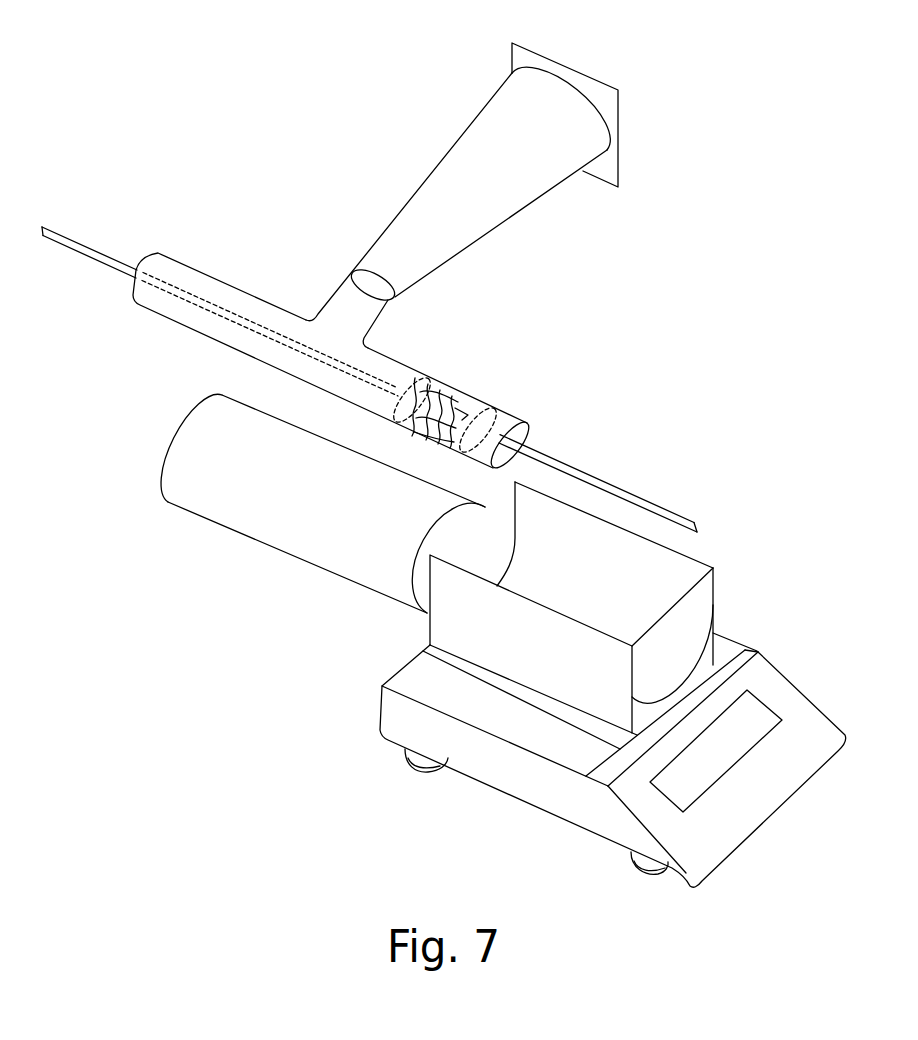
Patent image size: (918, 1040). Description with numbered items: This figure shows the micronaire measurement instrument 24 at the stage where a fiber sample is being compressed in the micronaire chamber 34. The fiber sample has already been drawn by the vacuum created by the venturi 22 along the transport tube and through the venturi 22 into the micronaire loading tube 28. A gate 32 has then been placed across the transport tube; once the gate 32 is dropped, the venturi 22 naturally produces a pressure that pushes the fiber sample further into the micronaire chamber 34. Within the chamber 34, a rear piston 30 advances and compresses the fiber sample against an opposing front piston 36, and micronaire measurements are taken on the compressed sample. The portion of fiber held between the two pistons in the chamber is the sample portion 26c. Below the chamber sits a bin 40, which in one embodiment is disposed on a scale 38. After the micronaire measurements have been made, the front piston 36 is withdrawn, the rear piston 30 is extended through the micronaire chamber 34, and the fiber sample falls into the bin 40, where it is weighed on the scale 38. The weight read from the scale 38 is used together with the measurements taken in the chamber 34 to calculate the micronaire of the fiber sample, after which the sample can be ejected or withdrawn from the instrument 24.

The venturi 22 is at (459, 138).
The micronaire measurement instrument 24 is at (626, 271).
The sample portion 26c is at (462, 400).
The micronaire loading tube 28 is at (153, 313).
The rear piston 30 is at (228, 312).
The gate 32 is at (512, 66).
The micronaire chamber 34 is at (440, 387).
The front piston 36 is at (615, 483).
The scale 38 is at (387, 725).
The bin 40 is at (624, 576).